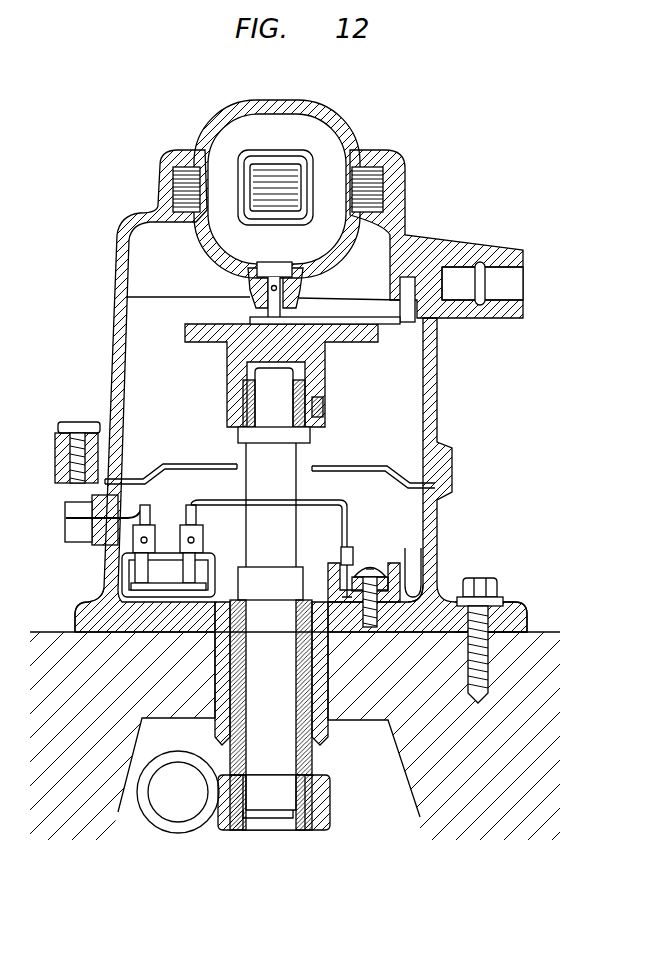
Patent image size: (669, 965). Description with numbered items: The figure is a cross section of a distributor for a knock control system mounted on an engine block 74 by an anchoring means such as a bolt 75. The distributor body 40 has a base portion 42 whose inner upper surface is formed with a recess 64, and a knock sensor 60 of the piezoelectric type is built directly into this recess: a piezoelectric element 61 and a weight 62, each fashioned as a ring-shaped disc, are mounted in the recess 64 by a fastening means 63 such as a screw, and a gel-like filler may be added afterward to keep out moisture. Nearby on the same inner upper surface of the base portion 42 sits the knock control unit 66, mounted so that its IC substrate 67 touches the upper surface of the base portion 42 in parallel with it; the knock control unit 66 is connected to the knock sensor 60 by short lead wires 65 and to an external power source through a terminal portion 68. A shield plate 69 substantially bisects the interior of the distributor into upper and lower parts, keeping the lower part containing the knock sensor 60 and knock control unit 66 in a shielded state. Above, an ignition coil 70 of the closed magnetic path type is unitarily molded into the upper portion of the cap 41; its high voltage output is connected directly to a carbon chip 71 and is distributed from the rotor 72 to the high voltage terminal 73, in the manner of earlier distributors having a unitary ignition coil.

The distributor body 40 is at (412, 391).
The cap 41 is at (119, 274).
The base portion 42 is at (528, 620).
The knock sensor 60 is at (365, 546).
The piezoelectric element 61 is at (432, 588).
The weight 62 is at (432, 560).
The fastening means 63 is at (375, 562).
The recess 64 is at (385, 566).
The lead wire 65 is at (327, 508).
The knock control unit 66 is at (122, 580).
The IC substrate 67 is at (92, 601).
The terminal portion 68 is at (70, 510).
The shield plate 69 is at (362, 464).
The ignition coil 70 is at (323, 150).
The carbon chip 71 is at (268, 316).
The rotor 72 is at (316, 366).
The high voltage terminal 73 is at (486, 283).
The engine block 74 is at (495, 739).
The bolt 75 is at (494, 590).